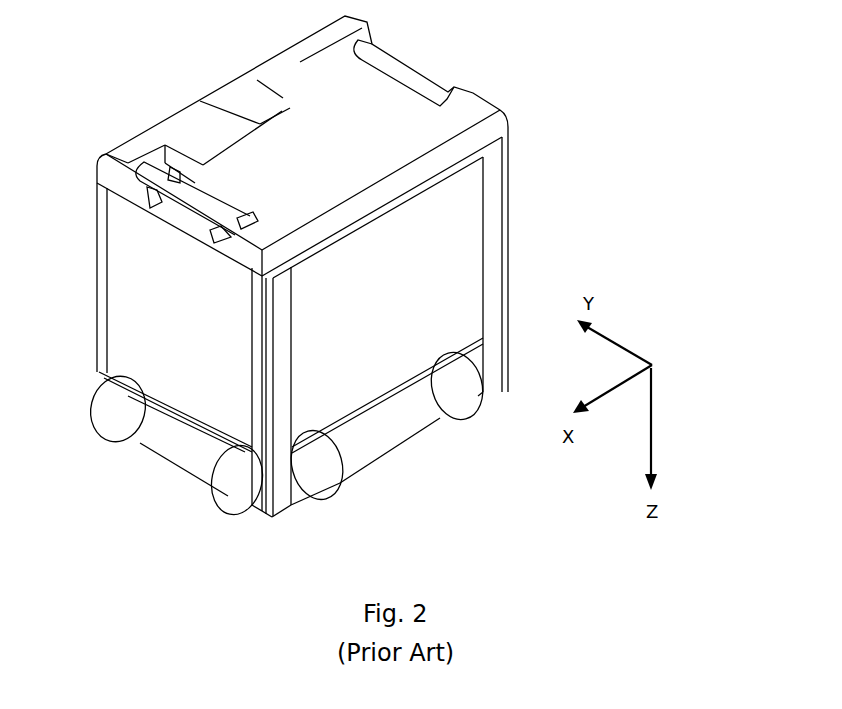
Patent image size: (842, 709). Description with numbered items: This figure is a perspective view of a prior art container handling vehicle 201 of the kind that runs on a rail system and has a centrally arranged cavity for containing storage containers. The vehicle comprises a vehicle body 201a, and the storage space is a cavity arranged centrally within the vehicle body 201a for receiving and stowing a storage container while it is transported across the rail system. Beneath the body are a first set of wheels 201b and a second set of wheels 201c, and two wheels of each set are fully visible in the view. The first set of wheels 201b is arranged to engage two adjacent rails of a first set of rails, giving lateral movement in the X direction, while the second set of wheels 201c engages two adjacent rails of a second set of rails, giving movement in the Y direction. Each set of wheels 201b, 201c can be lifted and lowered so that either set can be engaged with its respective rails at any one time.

The container handling vehicle 201 is at (565, 235).
The vehicle body 201a is at (195, 120).
The first set of wheels 201b is at (438, 456).
The second set of wheels 201c is at (140, 479).